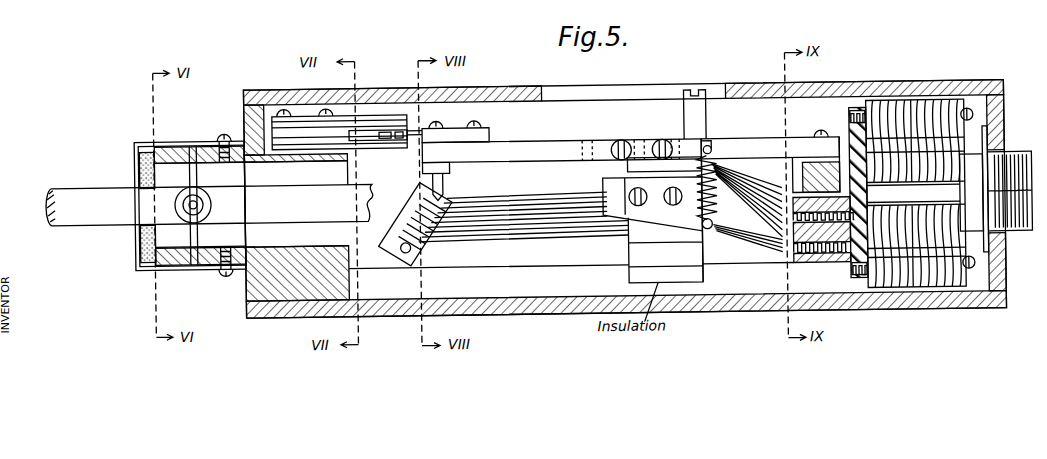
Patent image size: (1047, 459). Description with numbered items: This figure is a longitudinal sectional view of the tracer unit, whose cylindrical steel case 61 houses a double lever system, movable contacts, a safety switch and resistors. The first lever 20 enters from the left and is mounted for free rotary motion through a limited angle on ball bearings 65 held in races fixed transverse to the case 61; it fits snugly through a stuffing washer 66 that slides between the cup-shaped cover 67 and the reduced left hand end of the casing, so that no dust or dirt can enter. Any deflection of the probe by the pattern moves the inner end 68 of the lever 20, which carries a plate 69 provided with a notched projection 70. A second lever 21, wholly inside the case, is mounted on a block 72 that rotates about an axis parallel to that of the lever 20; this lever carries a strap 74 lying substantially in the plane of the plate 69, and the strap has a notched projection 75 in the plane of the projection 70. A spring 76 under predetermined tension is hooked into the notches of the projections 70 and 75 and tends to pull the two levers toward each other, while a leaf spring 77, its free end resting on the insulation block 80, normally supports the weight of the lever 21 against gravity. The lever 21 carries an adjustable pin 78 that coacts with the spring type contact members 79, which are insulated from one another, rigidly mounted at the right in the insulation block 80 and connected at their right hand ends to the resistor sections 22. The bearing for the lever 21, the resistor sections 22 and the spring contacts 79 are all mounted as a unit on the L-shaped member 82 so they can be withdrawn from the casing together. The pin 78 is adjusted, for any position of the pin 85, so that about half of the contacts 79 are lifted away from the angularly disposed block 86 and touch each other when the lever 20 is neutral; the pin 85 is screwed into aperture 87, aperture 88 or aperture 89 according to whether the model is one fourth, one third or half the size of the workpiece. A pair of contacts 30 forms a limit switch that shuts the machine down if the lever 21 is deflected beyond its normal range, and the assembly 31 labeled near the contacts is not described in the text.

The first lever 20 is at (105, 221).
The second lever 21 is at (752, 140).
The resistor sections 22 is at (930, 104).
The contacts 30 is at (392, 138).
The contact plate assembly 31 is at (378, 112).
The cylindrical steel case 61 is at (676, 313).
The ball bearings 65 is at (212, 200).
The stuffing washer 66 is at (140, 156).
The cup-shaped cover 67 is at (141, 262).
The end of the lever 68 is at (628, 162).
The plate 69 is at (704, 276).
The notched projection 70 is at (710, 233).
The block 72 is at (815, 175).
The strap 74 is at (600, 160).
The notched projection 75 is at (712, 143).
The spring 76 is at (676, 206).
The leaf spring 77 is at (790, 197).
The adjustable pin 78 is at (446, 187).
The spring type contact members 79 is at (522, 240).
The insulation block 80 is at (630, 277).
The L-shaped member 82 is at (470, 267).
The pin 85 is at (690, 91).
The angularly disposed block 86 is at (411, 207).
The aperture 87 is at (663, 140).
The aperture 88 is at (627, 140).
The aperture 89 is at (583, 140).